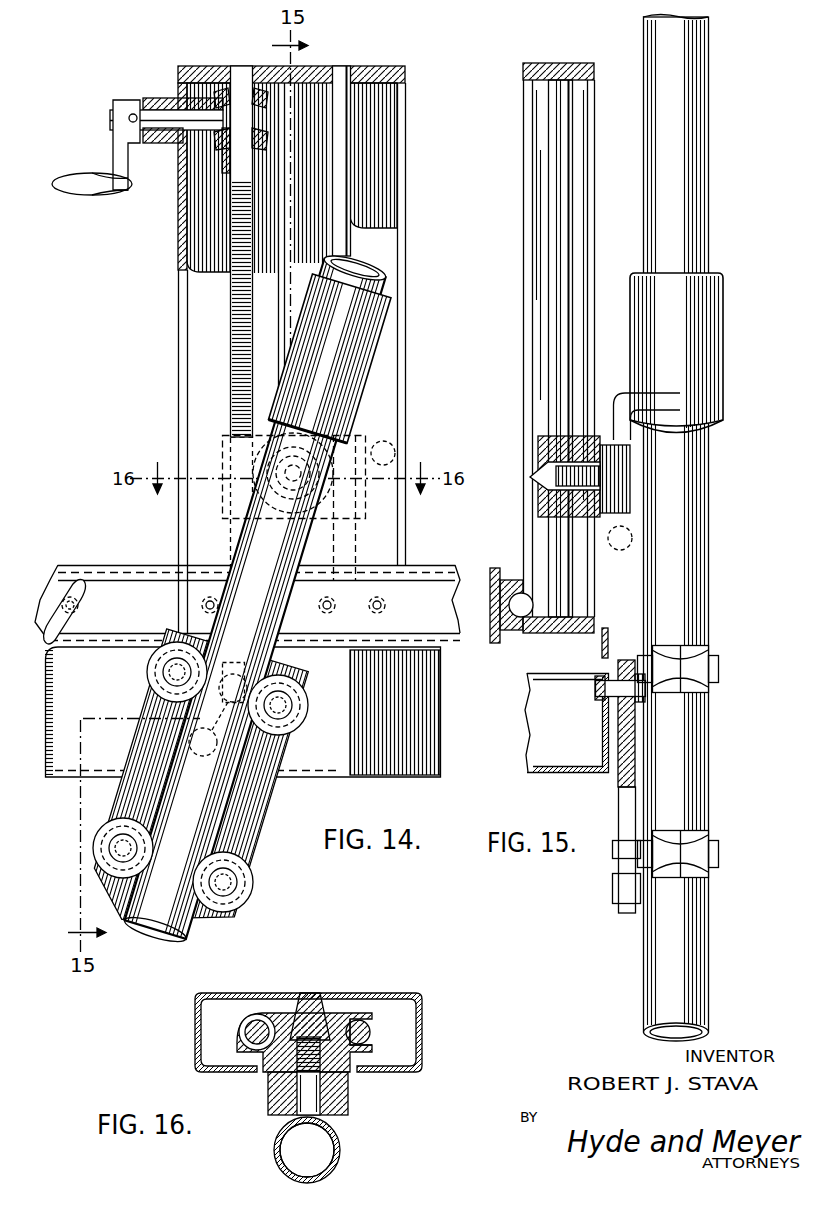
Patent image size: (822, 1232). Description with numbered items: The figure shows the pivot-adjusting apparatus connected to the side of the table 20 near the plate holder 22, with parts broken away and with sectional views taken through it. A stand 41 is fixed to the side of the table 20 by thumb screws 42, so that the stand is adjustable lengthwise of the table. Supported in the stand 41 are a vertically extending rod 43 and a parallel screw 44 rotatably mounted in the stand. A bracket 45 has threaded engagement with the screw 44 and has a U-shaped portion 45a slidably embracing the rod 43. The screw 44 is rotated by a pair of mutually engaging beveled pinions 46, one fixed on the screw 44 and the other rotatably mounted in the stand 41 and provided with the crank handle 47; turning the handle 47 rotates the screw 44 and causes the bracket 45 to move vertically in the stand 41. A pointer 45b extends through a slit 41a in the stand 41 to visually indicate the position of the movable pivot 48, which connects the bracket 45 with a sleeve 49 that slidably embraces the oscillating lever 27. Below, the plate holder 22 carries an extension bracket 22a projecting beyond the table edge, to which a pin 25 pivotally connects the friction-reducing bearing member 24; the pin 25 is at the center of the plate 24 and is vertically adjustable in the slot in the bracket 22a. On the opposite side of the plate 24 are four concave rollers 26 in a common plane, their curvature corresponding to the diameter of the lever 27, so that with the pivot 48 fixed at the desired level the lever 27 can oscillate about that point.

In FIG. 14, the table 20 is at (455, 632).
In FIG. 15, the table 20 is at (490, 628).
In FIG. 14, the plate holder 22 is at (432, 775).
In FIG. 14, the extension bracket 22a is at (355, 760).
In FIG. 15, the extension bracket 22a is at (530, 778).
In FIG. 14, the friction-reducing bearing member 24 is at (262, 830).
In FIG. 15, the friction-reducing bearing member 24 is at (620, 780).
In FIG. 14, the pin 25 is at (165, 710).
In FIG. 15, the pin 25 is at (594, 690).
In FIG. 14, the concave rollers 26 is at (148, 668).
In FIG. 15, the concave rollers 26 is at (700, 662).
In FIG. 14, the oscillating lever 27 is at (388, 270).
In FIG. 15, the oscillating lever 27 is at (705, 752).
In FIG. 16, the oscillating lever 27 is at (340, 1148).
In FIG. 14, the stand 41 is at (398, 66).
In FIG. 15, the stand 41 is at (552, 63).
In FIG. 16, the stand 41 is at (422, 1036).
In FIG. 14, the slit 41a is at (240, 284).
In FIG. 14, the thumb screws 42 is at (84, 596).
In FIG. 14, the rod 43 is at (346, 66).
In FIG. 15, the rod 43 is at (548, 120).
In FIG. 16, the rod 43 is at (371, 1036).
In FIG. 14, the screw 44 is at (246, 66).
In FIG. 16, the screw 44 is at (257, 1020).
In FIG. 14, the bracket 45 is at (330, 518).
In FIG. 15, the bracket 45 is at (585, 436).
In FIG. 16, the bracket 45 is at (333, 1013).
In FIG. 16, the U-shaped portion 45a is at (366, 1014).
In FIG. 15, the pointer 45b is at (530, 477).
In FIG. 16, the pointer 45b is at (303, 1000).
In FIG. 14, the beveled pinions 46 is at (174, 96).
In FIG. 14, the crank handle 47 is at (88, 176).
In FIG. 14, the movable pivot 48 is at (383, 453).
In FIG. 15, the movable pivot 48 is at (620, 513).
In FIG. 16, the movable pivot 48 is at (296, 1094).
In FIG. 14, the sleeve 49 is at (360, 378).
In FIG. 15, the sleeve 49 is at (722, 350).
In FIG. 16, the sleeve 49 is at (280, 1166).